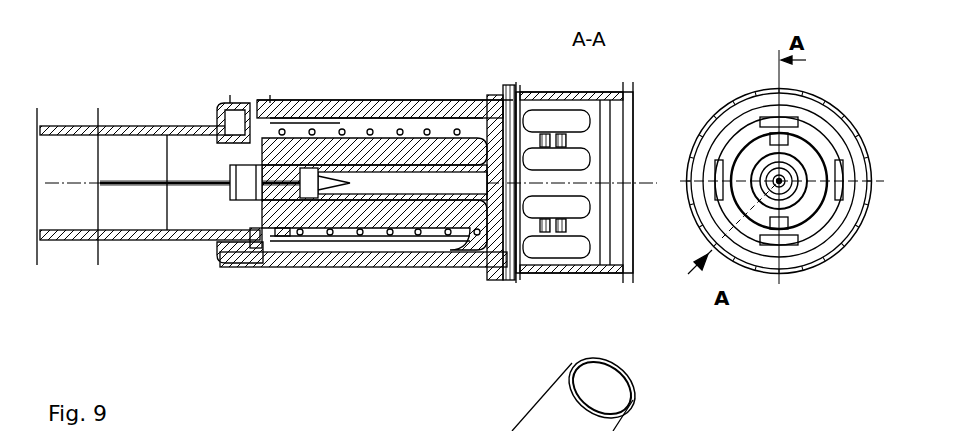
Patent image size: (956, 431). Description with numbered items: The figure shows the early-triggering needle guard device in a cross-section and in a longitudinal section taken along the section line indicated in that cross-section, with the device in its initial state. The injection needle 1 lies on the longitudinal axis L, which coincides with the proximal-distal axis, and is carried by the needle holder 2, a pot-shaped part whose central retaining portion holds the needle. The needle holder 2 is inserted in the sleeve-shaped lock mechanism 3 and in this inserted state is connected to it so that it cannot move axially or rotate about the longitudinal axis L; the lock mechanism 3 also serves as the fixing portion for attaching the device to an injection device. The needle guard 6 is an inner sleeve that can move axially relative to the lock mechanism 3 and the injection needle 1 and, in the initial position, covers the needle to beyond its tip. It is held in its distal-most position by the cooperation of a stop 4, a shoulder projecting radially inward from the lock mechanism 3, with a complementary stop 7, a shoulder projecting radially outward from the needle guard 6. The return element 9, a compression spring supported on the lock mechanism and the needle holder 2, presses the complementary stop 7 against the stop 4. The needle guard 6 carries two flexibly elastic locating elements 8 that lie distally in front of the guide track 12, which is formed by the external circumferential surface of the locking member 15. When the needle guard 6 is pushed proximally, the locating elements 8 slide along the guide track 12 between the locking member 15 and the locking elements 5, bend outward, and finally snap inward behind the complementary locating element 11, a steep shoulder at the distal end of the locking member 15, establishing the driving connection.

The injection needle 1 is at (192, 184).
The needle holder 2 is at (430, 190).
The lock mechanism 3 is at (330, 262).
The stop 4 is at (235, 250).
The locking element 5 is at (300, 103).
The needle guard 6 is at (118, 242).
The complementary stop 7 is at (255, 246).
The locating element 8 is at (237, 128).
The return element 9 is at (388, 236).
The complementary locating element 11 is at (282, 236).
The guide track 12 is at (230, 181).
The locking member 15 is at (380, 150).
The longitudinal axis L is at (63, 185).